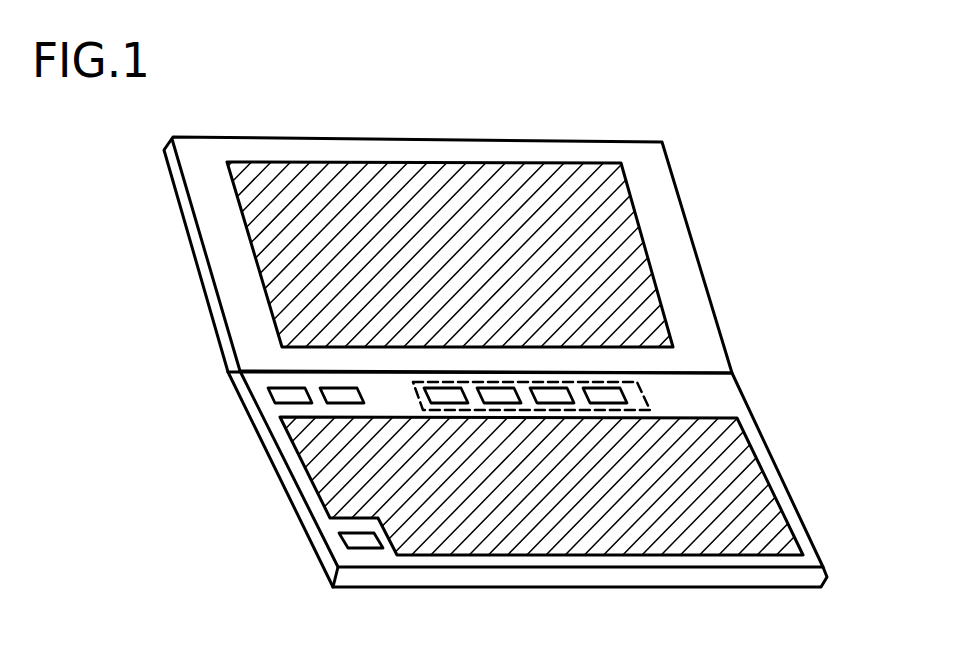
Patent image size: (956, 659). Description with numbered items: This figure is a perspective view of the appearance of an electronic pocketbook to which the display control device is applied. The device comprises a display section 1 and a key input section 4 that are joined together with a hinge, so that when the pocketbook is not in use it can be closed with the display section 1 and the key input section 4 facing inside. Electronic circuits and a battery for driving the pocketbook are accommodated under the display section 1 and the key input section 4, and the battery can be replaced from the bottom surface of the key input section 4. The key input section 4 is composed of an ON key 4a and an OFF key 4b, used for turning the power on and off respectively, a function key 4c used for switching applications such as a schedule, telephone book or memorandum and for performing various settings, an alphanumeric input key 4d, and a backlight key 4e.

The display section 1 is at (626, 255).
The key input section 4 is at (720, 407).
The ON key 4a is at (293, 394).
The OFF key 4b is at (342, 396).
The function key 4c is at (636, 394).
The alphanumeric input key 4d is at (738, 512).
The backlight key 4e is at (357, 540).